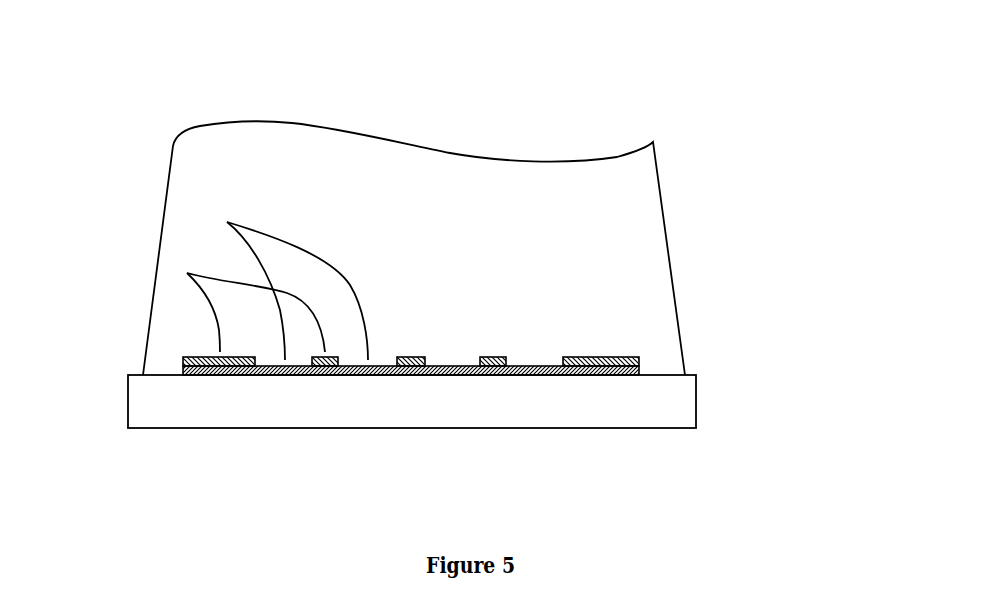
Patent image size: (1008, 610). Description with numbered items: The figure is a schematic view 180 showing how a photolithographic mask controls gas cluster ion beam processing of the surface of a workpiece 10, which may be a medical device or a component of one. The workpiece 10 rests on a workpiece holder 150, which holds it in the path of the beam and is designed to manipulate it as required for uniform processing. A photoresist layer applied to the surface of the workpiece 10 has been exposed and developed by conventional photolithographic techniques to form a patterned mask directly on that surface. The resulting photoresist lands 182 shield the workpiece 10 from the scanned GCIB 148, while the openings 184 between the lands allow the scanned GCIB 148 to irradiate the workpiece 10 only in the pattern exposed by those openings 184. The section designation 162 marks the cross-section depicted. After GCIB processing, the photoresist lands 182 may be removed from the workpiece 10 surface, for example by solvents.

The schematic view 180 is at (187, 90).
The scanned GCIB 148 is at (623, 217).
The section A-A 162 is at (822, 256).
The openings 184 is at (227, 222).
The photoresist lands 182 is at (187, 273).
The workpiece 10 is at (642, 371).
The workpiece holder 150 is at (682, 404).